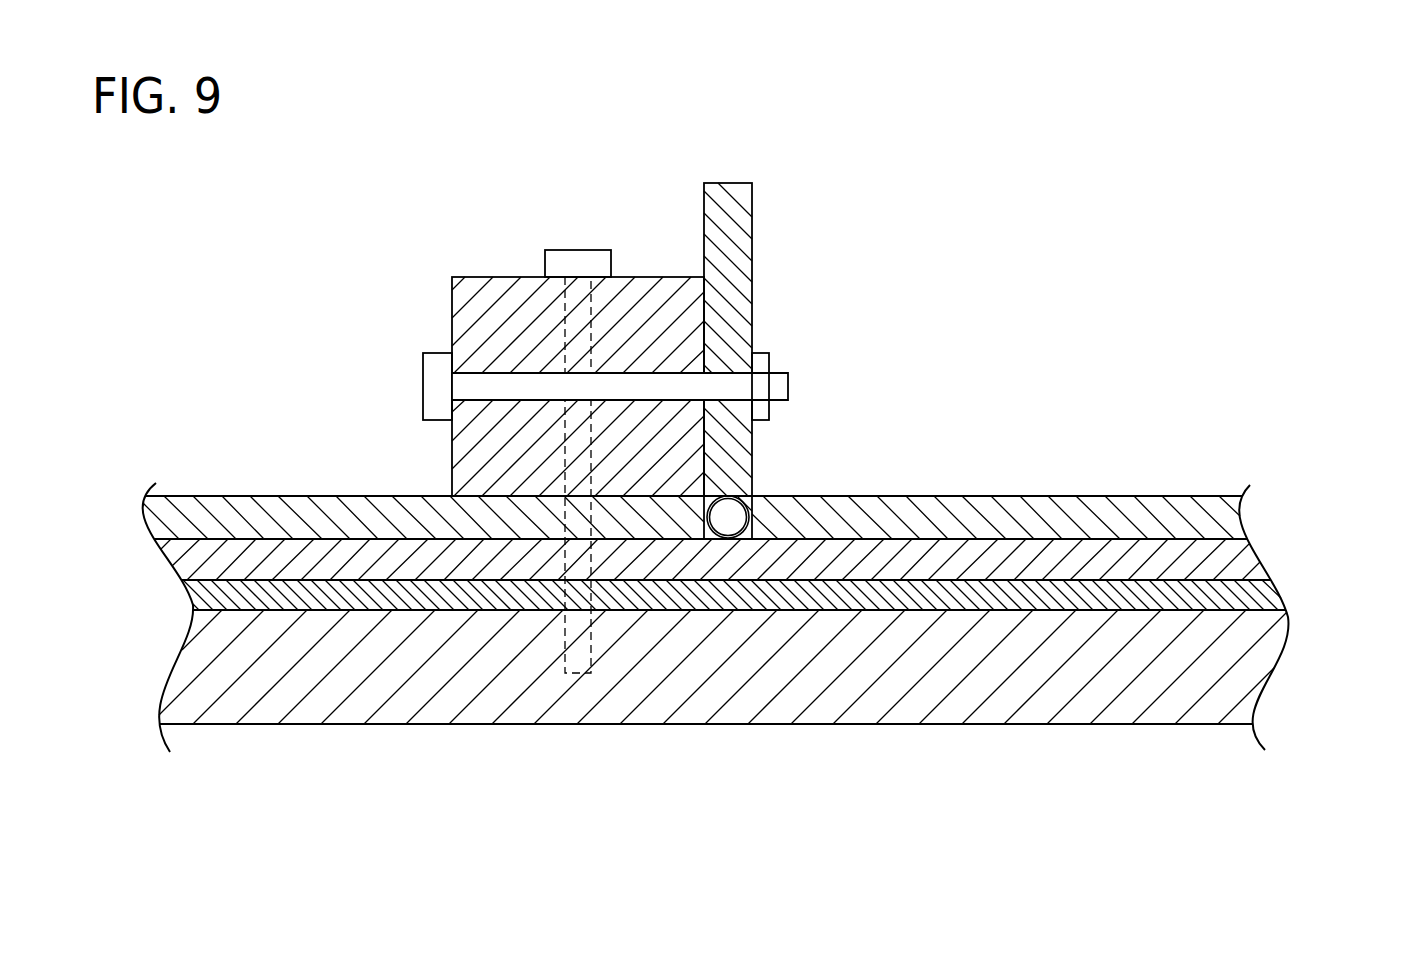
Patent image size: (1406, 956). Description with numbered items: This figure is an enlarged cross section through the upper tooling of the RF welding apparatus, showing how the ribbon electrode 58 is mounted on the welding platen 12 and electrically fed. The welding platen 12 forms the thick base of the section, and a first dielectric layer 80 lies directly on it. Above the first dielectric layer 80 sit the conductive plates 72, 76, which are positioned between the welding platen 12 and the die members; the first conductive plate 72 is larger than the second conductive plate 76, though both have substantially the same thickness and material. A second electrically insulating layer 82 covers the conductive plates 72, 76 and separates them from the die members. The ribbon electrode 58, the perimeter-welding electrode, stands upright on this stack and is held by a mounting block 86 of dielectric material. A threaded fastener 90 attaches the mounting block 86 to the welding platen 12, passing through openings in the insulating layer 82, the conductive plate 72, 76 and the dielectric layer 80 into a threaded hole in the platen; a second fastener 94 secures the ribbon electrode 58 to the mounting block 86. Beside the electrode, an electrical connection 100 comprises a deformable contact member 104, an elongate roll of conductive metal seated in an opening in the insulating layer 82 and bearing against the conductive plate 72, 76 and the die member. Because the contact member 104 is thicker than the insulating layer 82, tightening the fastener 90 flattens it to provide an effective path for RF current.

The upper welding platen 12 is at (1163, 727).
The ribbon electrode 58 is at (753, 228).
The first conductive plate 72 is at (779, 541).
The second conductive plate 76 is at (1245, 560).
The first dielectric layer 80 is at (1277, 593).
The second electrically insulating layer 82 is at (1180, 500).
The mounting block 86 is at (452, 303).
The threaded fastener 90 is at (572, 250).
The fastener 94 is at (423, 403).
The electrical connection 100 is at (799, 470).
The deformable contact member 104 is at (749, 520).